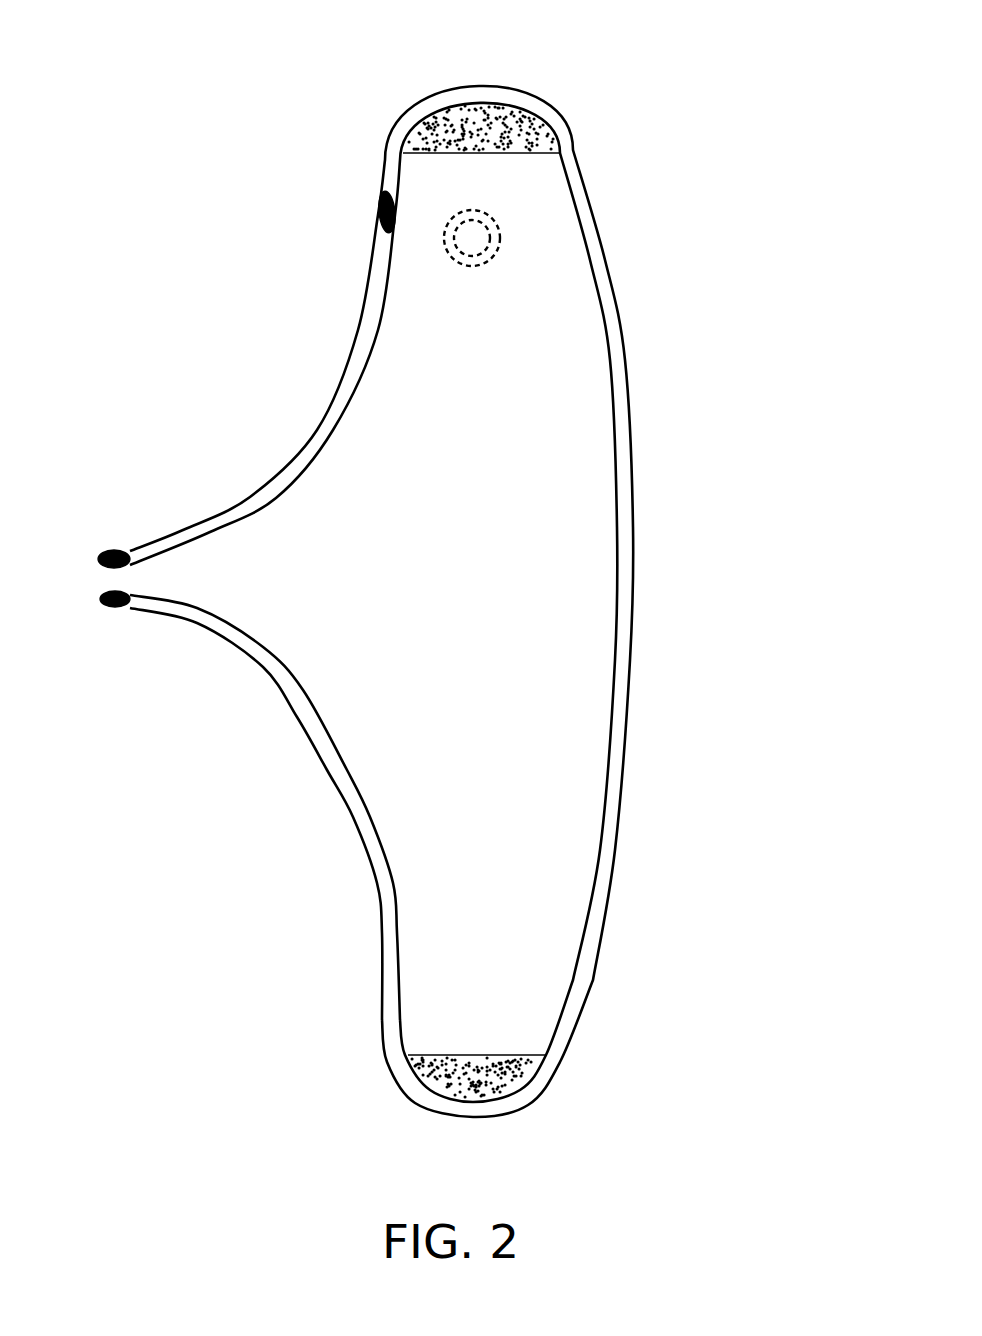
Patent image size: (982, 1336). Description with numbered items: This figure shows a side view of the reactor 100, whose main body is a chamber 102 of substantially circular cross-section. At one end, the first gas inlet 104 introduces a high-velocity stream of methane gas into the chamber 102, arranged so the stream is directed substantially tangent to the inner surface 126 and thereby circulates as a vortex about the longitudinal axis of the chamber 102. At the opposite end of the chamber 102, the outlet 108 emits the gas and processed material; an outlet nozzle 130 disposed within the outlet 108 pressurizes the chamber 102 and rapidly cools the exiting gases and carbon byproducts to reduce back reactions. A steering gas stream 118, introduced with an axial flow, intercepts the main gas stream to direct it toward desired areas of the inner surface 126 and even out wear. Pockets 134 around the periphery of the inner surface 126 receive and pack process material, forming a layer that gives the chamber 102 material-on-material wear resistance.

The reactor 100 is at (762, 86).
The chamber 102 is at (634, 438).
The first gas inlet 104 is at (485, 266).
The outlet 108 is at (158, 572).
The gas stream 118 is at (380, 222).
The inner surface 126 is at (617, 627).
The outlet nozzle 130 is at (98, 597).
The pockets 134 is at (503, 120).